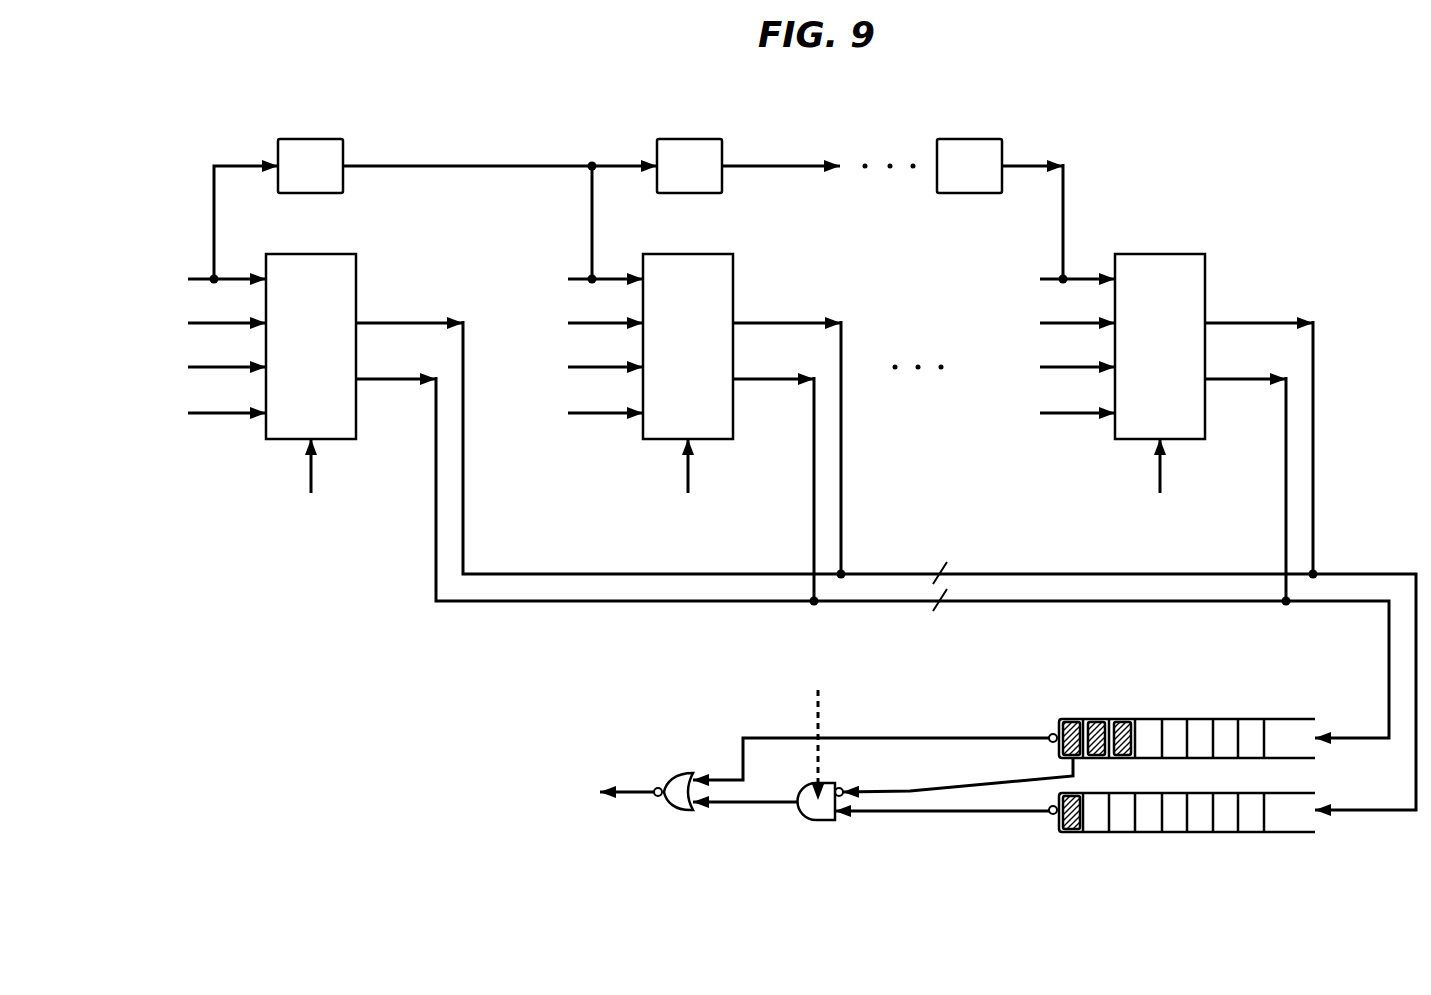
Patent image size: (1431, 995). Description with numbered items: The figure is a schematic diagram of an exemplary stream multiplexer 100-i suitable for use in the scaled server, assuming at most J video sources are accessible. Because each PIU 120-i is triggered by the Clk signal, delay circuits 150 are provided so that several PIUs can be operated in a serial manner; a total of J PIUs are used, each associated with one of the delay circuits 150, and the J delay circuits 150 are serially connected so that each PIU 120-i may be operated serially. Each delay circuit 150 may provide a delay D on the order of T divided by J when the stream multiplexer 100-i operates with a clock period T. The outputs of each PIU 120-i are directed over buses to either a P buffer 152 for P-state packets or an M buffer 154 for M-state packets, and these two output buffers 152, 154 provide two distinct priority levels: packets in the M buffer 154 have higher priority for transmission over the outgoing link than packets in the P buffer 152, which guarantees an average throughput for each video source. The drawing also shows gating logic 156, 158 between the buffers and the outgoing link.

The stream multiplexer 100-i is at (226, 72).
The delay circuit 150 is at (640, 138).
The PIU 120-i is at (779, 342).
The M buffer 154 is at (1120, 719).
The P buffer 152 is at (1122, 832).
The AND gate 156 is at (822, 820).
The NOR gate 158 is at (675, 775).